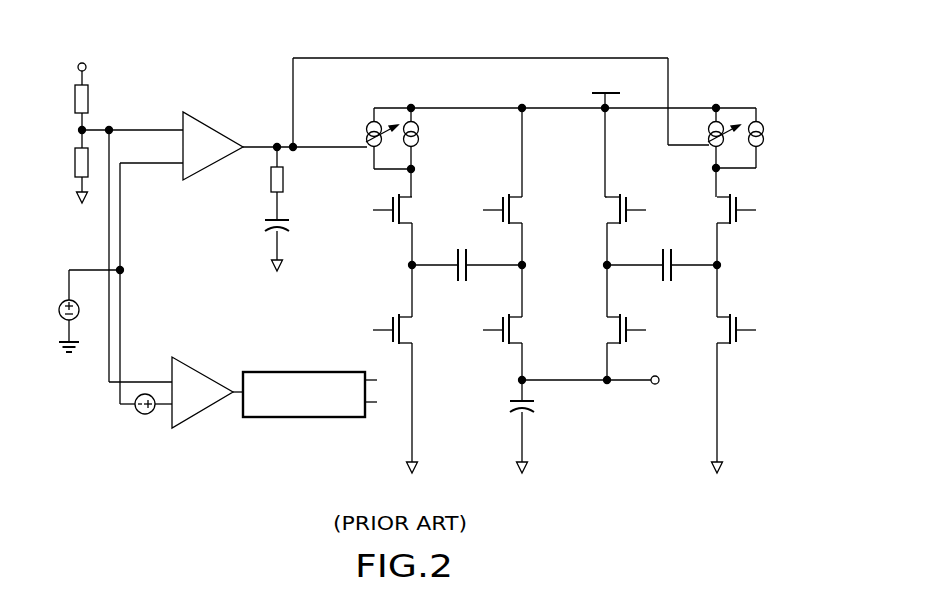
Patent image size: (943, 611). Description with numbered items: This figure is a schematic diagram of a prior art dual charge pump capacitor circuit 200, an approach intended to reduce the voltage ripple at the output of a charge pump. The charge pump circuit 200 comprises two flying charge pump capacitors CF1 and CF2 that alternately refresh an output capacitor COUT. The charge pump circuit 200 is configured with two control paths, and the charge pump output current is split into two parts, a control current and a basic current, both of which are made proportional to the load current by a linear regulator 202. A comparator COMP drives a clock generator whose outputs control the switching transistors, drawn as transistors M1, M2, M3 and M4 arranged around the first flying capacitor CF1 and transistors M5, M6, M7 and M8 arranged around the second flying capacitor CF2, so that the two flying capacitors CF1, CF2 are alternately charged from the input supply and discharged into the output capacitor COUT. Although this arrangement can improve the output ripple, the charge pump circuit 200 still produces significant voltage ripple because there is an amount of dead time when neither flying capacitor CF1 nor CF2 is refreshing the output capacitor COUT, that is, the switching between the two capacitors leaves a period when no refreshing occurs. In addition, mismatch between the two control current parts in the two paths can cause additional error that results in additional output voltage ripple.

The charge pump circuit 200 is at (692, 48).
The linear regulator 202 is at (223, 130).
The comparator COMP is at (203, 388).
The transistor M1 is at (511, 207).
The transistor M2 is at (399, 331).
The transistor M3 is at (399, 207).
The transistor M4 is at (512, 331).
The transistor M5 is at (614, 329).
The transistor M6 is at (614, 208).
The transistor M7 is at (727, 329).
The transistor M8 is at (727, 206).
The flying charge pump capacitor CF1 is at (467, 253).
The flying charge pump capacitor CF2 is at (662, 254).
The output capacitor COUT is at (550, 426).